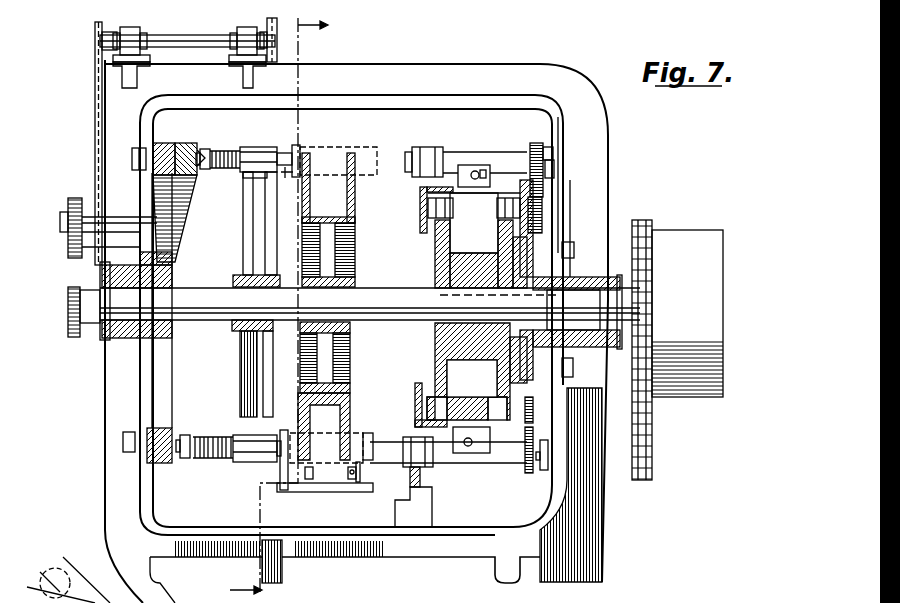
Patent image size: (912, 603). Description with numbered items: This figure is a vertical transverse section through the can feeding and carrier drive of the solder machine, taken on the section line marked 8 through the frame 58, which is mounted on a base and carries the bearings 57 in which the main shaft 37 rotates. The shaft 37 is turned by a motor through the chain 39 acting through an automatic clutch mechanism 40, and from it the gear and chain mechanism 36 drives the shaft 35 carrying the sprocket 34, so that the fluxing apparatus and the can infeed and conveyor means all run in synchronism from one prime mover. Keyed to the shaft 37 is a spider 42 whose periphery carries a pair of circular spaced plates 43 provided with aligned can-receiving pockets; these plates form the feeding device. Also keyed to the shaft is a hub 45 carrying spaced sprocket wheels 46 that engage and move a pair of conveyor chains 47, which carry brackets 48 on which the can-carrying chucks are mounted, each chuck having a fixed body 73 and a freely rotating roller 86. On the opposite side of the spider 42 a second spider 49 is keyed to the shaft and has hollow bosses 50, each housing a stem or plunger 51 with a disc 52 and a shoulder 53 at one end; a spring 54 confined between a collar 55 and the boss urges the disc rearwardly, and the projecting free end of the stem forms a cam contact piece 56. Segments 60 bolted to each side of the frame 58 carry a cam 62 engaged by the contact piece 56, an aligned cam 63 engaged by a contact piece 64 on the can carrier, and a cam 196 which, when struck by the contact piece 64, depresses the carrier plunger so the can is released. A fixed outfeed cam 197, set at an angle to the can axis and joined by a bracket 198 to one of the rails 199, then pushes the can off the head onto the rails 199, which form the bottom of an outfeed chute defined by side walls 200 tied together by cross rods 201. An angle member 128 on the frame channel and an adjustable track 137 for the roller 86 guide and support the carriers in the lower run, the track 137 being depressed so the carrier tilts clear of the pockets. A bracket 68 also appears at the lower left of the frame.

The section line 8- 8 is at (277, 307).
The sprocket 34 is at (278, 52).
The shaft 35 is at (212, 38).
The gear and chain mechanism 36 is at (62, 232).
The shaft 37 is at (205, 295).
The chain 39 is at (652, 437).
The automatic clutch mechanism 40 is at (670, 280).
The spider 42 is at (332, 248).
The circular spaced plates 43 is at (348, 190).
The hub 45 is at (445, 268).
The sprocket wheels 46 is at (500, 240).
The conveyor chains 47 is at (504, 219).
The brackets 48 is at (420, 201).
The spider 49 is at (246, 238).
The hollow bosses 50 is at (262, 147).
The stem or plunger 51 is at (286, 155).
The disc 52 is at (300, 152).
The shoulder 53 is at (288, 172).
The spring 54 is at (232, 153).
The collar 55 is at (205, 150).
The cam contact piece 56 is at (196, 167).
The bearings 57 is at (110, 318).
The frame 58 is at (612, 180).
The segments 60 is at (155, 145).
The cam 62 is at (190, 196).
The cam 63 is at (555, 166).
The cam contact piece 64 is at (537, 147).
The bracket 68 is at (172, 596).
The fixed body 73 is at (470, 153).
The roller 86 is at (425, 147).
The angle member 128 is at (418, 404).
The track 137 is at (426, 474).
The cam 196 is at (548, 455).
The outfeed cam 197 is at (357, 479).
The bracket 198 is at (350, 479).
The rails 199 is at (310, 479).
The side walls 200 is at (282, 477).
The cross rods 201 is at (290, 493).